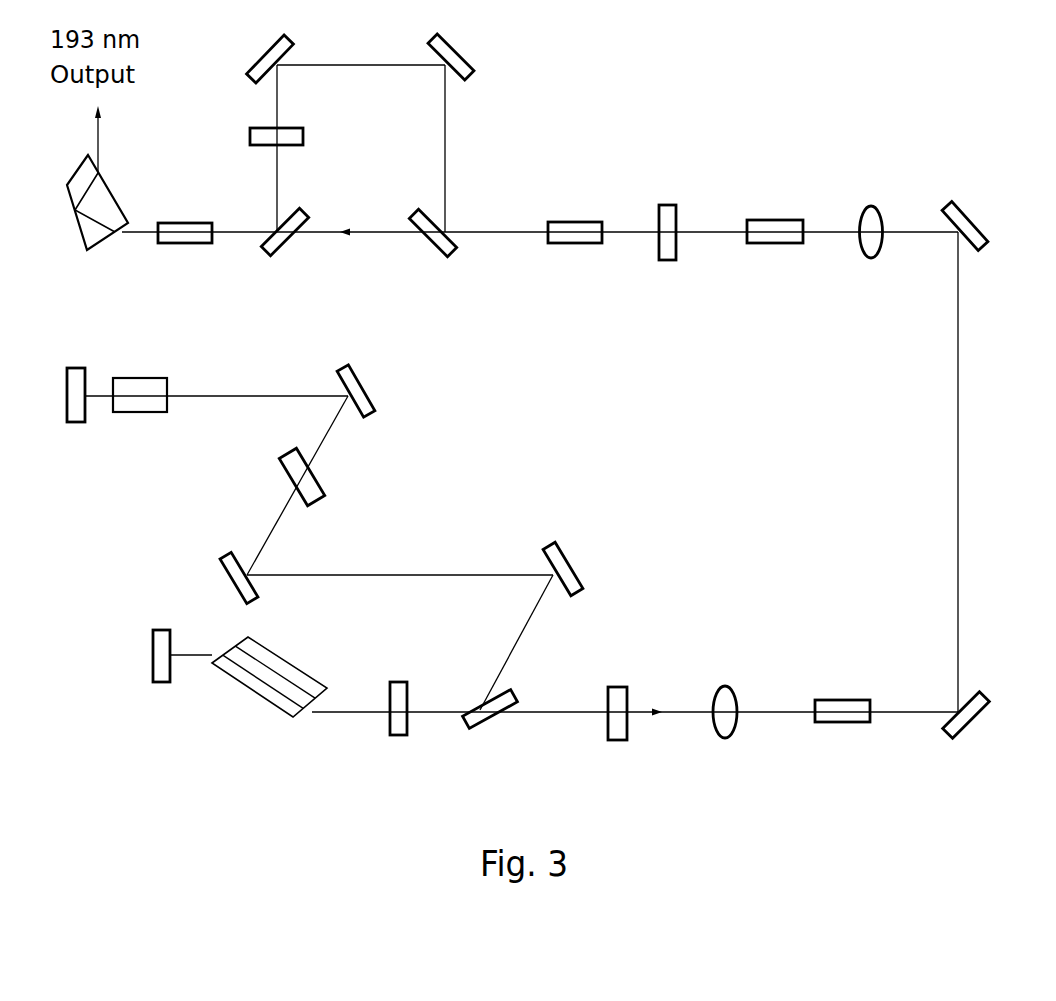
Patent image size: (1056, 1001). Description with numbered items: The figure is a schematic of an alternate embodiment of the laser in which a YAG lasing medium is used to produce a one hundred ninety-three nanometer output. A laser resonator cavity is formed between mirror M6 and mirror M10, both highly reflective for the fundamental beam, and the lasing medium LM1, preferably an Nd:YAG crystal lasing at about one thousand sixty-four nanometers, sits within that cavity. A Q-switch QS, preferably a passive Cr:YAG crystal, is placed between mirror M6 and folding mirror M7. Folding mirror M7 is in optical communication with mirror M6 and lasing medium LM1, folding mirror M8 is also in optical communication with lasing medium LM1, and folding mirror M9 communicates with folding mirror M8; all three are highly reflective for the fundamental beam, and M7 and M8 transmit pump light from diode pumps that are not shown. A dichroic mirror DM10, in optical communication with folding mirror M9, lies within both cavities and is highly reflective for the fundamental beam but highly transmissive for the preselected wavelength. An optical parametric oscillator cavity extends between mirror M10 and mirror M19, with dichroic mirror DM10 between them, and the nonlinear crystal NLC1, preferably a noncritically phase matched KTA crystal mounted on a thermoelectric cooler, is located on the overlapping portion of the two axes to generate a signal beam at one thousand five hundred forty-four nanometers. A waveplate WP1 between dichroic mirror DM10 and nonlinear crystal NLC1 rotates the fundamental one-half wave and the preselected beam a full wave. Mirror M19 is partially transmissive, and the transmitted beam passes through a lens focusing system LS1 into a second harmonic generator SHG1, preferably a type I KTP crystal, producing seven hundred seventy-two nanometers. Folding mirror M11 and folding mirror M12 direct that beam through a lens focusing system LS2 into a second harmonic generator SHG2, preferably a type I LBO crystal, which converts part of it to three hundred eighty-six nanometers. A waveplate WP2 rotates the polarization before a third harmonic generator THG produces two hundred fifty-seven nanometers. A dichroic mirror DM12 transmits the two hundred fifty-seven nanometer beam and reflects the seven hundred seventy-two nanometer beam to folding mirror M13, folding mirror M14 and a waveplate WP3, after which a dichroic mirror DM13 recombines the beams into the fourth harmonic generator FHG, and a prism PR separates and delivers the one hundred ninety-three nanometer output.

The prism PR is at (80, 198).
The fourth harmonic generator FHG is at (181, 258).
The waveplate WP3 is at (241, 136).
The folding mirror M14 is at (250, 55).
The folding mirror M13 is at (471, 53).
The dichroic mirror DM13 is at (296, 253).
The dichroic mirror DM12 is at (429, 253).
The third harmonic generator THG is at (569, 257).
The waveplate WP2 is at (672, 251).
The LBO nonlinear crystal LBO is at (775, 236).
The second harmonic generator SHG2 is at (775, 258).
The lens focusing system LS2 is at (870, 253).
The folding mirror M12 is at (985, 222).
The mirror M6 is at (60, 378).
The Q-switch QS is at (140, 373).
The folding mirror M7 is at (382, 399).
The lasing medium LM1 is at (275, 476).
The folding mirror M8 is at (211, 575).
The folding mirror M9 is at (583, 568).
The mirror M10 is at (175, 676).
The nonlinear crystal NLC1 is at (313, 688).
The waveplate WP1 is at (402, 729).
The dichroic mirror DM10 is at (494, 732).
The mirror M19 is at (608, 733).
The lens focusing system LS1 is at (724, 732).
The KTP nonlinear crystal KTP is at (842, 718).
The second harmonic generator SHG1 is at (842, 690).
The folding mirror M11 is at (985, 724).